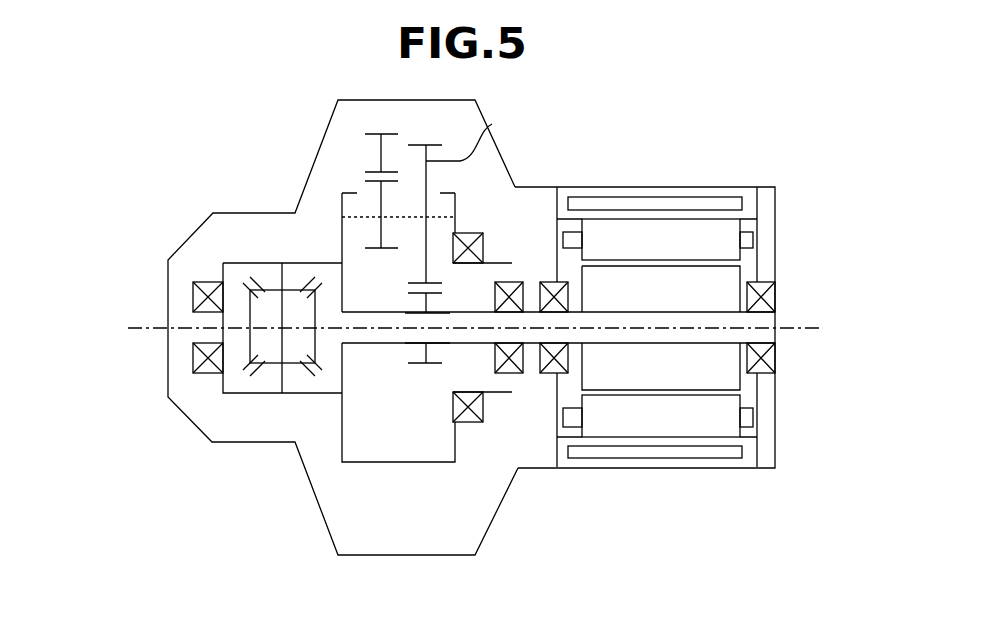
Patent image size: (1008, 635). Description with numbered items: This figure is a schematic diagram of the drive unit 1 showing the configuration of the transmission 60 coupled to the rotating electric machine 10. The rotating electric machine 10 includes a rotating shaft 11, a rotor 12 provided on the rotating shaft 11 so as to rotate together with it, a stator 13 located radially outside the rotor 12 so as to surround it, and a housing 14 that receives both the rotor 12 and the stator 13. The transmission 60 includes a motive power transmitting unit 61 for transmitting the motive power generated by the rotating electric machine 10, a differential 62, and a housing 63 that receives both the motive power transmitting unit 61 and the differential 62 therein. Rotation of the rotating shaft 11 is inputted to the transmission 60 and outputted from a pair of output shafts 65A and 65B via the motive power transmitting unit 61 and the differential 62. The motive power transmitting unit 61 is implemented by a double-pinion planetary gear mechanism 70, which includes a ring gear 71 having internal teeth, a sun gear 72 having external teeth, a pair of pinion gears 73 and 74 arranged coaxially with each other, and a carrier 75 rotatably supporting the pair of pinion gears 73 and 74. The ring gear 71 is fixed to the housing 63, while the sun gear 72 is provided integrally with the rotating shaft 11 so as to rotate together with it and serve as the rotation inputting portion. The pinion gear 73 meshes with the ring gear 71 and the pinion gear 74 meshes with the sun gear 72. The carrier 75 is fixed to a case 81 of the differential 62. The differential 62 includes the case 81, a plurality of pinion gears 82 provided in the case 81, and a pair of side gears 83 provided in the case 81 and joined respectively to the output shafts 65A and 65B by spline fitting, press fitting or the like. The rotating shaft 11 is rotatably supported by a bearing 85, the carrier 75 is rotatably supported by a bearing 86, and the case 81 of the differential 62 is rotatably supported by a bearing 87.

The vehicle drive device 1 is at (772, 132).
The rotating electric machine 10 is at (668, 185).
The rotating shaft 11 is at (607, 343).
The rotor 12 is at (647, 390).
The stator 13 is at (703, 437).
The housing 14 is at (728, 187).
The transmission 60 is at (263, 210).
The motive power transmitting unit 61 is at (482, 188).
The double-pinion planetary gear mechanism 70 is at (565, 353).
The differential 62 is at (228, 255).
The housing 63 is at (335, 543).
The output shaft 65A is at (670, 294).
The output shaft 65B is at (143, 328).
The ring gear 71 is at (381, 153).
The sun gear 72 is at (408, 355).
The pinion gear 73 is at (370, 192).
The pinion gear 74 is at (490, 126).
The carrier 75 is at (397, 462).
The case 81 is at (270, 364).
The pinion gears 82 is at (268, 363).
The side gears 83 is at (255, 350).
The bearing 85 is at (515, 375).
The bearing 86 is at (468, 423).
The bearing 87 is at (192, 368).